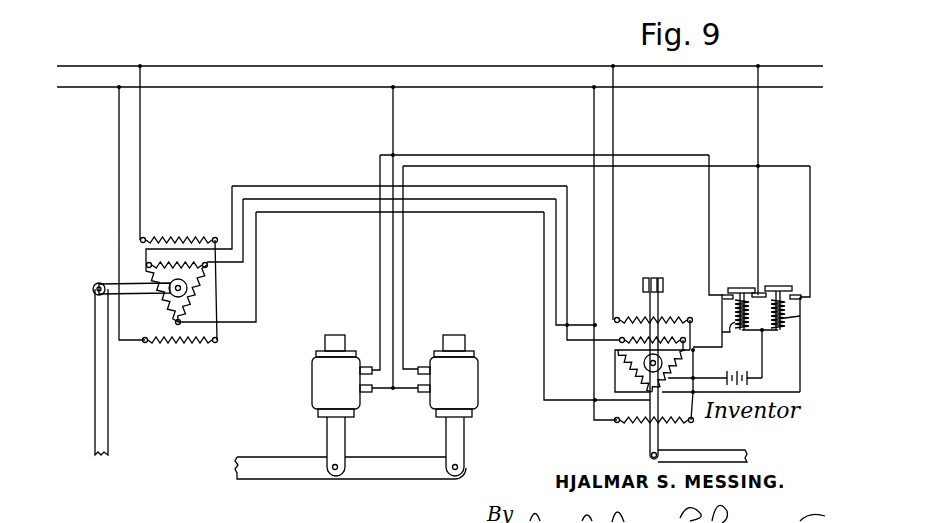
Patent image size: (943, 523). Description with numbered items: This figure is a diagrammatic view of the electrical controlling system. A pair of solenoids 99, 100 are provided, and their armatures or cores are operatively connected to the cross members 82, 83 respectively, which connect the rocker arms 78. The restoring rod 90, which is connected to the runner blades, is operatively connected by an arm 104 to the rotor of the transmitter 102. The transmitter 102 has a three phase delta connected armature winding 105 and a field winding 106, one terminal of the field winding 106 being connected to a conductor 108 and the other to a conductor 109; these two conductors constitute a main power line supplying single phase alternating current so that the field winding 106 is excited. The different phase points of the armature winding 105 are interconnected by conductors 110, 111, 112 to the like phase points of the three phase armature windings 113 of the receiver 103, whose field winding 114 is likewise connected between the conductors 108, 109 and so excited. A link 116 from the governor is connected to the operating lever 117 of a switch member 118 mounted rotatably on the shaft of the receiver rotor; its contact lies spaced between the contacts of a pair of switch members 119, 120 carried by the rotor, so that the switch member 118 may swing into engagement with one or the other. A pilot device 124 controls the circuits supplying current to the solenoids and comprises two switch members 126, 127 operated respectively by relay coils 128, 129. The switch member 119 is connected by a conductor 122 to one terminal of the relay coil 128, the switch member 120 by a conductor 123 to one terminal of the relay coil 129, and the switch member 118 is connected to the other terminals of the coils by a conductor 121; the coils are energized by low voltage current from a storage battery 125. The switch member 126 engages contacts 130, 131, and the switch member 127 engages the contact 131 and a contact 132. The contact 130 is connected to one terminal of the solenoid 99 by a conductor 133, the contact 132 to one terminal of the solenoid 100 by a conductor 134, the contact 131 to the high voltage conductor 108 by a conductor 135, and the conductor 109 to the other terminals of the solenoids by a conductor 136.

The conductor 108 is at (262, 50).
The conductor 109 is at (283, 92).
The conductor 110 is at (357, 173).
The conductor 111 is at (290, 170).
The conductor 112 is at (336, 212).
The transmitter 102 is at (202, 295).
The arm 104 is at (111, 283).
The armature winding 105 is at (220, 223).
The field winding 106 is at (177, 218).
The restoring rod 90 is at (103, 432).
The rocker arms 78 is at (280, 439).
The cross member 82 is at (330, 470).
The cross member 83 is at (455, 472).
The solenoid 99 is at (342, 405).
The solenoid 100 is at (448, 405).
The conductor 133 is at (380, 313).
The conductor 134 is at (411, 321).
The conductor 135 is at (759, 118).
The conductor 136 is at (396, 269).
The receiver 103 is at (663, 208).
The armature windings 113 is at (630, 365).
The field winding 114 is at (634, 422).
The link 116 is at (735, 438).
The operating lever 117 is at (659, 440).
The switch member 118 is at (655, 277).
The switch member 119 is at (663, 285).
The switch member 120 is at (642, 285).
The conductor 121 is at (731, 347).
The conductor 122 is at (719, 357).
The conductor 123 is at (801, 373).
The pilot device 124 is at (767, 369).
The storage battery 125 is at (770, 385).
The switch member 126 is at (742, 288).
The switch member 127 is at (780, 286).
The relay coil 128 is at (744, 342).
The relay coil 129 is at (814, 325).
The contact 130 is at (731, 294).
The contact 131 is at (774, 353).
The contact 132 is at (801, 294).